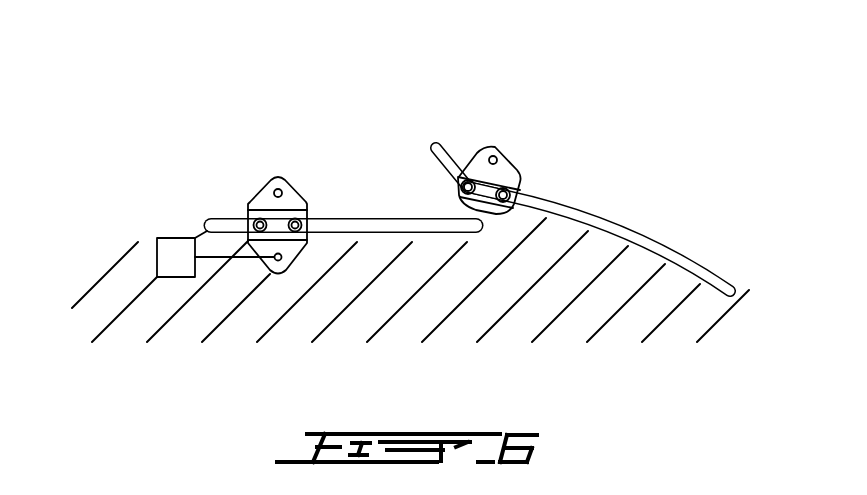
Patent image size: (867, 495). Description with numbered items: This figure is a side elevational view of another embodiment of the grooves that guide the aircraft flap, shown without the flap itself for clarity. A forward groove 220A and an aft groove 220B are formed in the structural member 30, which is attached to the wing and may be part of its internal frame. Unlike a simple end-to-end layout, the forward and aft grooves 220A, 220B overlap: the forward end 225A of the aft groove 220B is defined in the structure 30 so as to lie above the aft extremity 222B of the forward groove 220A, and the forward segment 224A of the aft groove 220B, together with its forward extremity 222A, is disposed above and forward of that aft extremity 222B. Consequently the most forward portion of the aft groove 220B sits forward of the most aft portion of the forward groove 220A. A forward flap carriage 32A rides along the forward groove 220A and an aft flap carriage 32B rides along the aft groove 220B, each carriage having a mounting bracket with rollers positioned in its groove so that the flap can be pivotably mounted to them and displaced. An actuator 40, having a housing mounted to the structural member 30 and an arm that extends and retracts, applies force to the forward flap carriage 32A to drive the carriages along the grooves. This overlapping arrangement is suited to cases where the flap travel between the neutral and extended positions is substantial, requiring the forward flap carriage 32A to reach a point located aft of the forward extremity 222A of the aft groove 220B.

The structural member 30 is at (390, 308).
The forward flap carriage 32A is at (258, 192).
The aft flap carriage 32B is at (486, 146).
The actuator 40 is at (172, 226).
The forward groove 220A is at (343, 206).
The aft groove 220B is at (636, 214).
The forward extremity of the aft groove 222A is at (433, 140).
The aft extremity of the forward groove 222B is at (483, 232).
The forward segment of the aft groove 224A is at (468, 212).
The forward end of the aft groove 225A is at (416, 128).